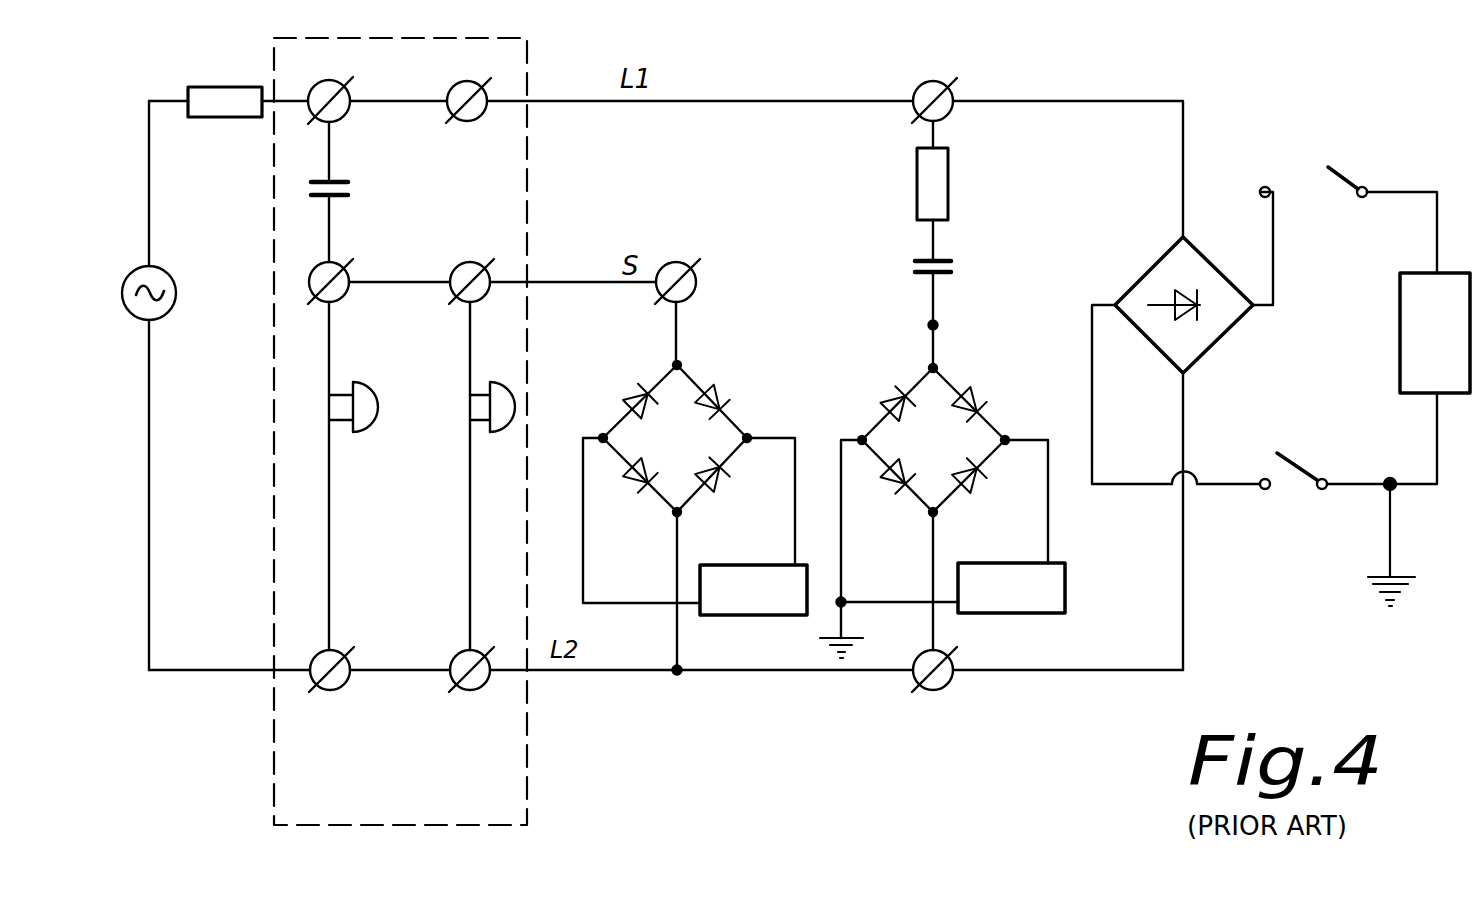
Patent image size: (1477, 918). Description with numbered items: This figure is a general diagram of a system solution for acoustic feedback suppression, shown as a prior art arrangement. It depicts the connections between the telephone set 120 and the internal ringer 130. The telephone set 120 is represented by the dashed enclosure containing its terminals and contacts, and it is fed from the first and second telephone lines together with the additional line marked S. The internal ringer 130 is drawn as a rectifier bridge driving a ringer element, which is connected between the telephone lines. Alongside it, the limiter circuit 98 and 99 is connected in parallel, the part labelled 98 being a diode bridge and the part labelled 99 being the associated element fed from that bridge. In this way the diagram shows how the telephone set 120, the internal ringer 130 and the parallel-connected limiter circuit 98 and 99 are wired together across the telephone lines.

The limiter circuit 98 is at (633, 590).
The limiter circuit 99 is at (745, 597).
The internal ringer 130 is at (1018, 592).
The telephone set 120 is at (527, 798).